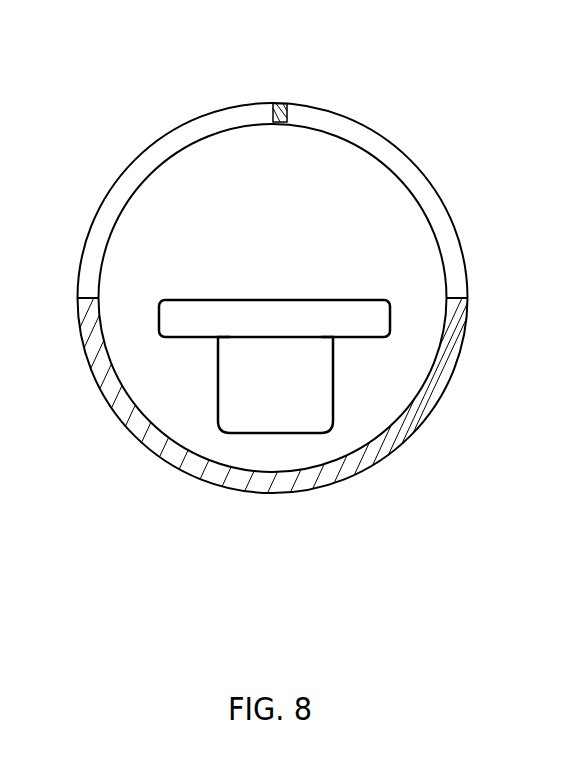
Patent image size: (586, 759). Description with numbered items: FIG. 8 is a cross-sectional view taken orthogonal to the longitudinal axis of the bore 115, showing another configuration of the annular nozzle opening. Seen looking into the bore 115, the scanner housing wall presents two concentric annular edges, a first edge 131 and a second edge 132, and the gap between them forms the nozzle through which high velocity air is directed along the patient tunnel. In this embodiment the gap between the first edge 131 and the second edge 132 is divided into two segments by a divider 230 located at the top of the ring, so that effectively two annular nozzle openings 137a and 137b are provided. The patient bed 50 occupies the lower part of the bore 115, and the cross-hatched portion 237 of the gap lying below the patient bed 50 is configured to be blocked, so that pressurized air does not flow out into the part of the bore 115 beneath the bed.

The patient bed 50 is at (365, 323).
The bore 115 is at (154, 217).
The first edge 131 is at (373, 166).
The second edge 132 is at (350, 112).
The annular nozzle opening 137a is at (204, 114).
The annular nozzle opening 137b is at (410, 164).
The divider 230 is at (276, 103).
The blocked portion of the gap 237 is at (412, 425).